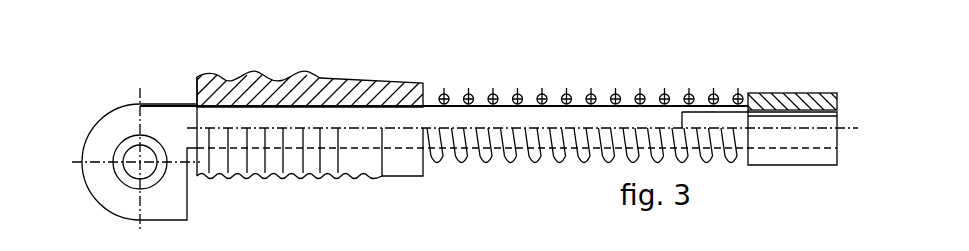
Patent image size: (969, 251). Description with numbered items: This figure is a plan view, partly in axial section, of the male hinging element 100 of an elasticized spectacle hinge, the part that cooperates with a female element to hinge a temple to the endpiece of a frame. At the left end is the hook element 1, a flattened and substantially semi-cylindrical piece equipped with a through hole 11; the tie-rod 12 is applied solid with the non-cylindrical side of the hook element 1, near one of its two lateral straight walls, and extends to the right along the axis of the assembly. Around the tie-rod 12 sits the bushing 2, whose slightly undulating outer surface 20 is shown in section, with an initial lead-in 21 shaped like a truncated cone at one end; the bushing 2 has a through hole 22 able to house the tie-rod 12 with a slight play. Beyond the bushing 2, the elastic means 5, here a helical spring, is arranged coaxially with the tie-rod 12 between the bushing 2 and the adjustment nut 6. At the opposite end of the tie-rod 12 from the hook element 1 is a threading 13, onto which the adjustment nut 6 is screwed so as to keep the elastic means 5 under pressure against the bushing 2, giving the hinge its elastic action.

The hook element 1 is at (120, 128).
The through hole 11 is at (135, 167).
The male hinging element 100 is at (193, 100).
The bushing 2 is at (338, 78).
The through hole 22 is at (392, 106).
The undulating outer surface 20 is at (235, 163).
The initial lead-in 21 is at (358, 163).
The elastic means 5 is at (567, 94).
The tie-rod 12 is at (628, 114).
The adjustment nut 6 is at (800, 96).
The threading 13 is at (825, 123).